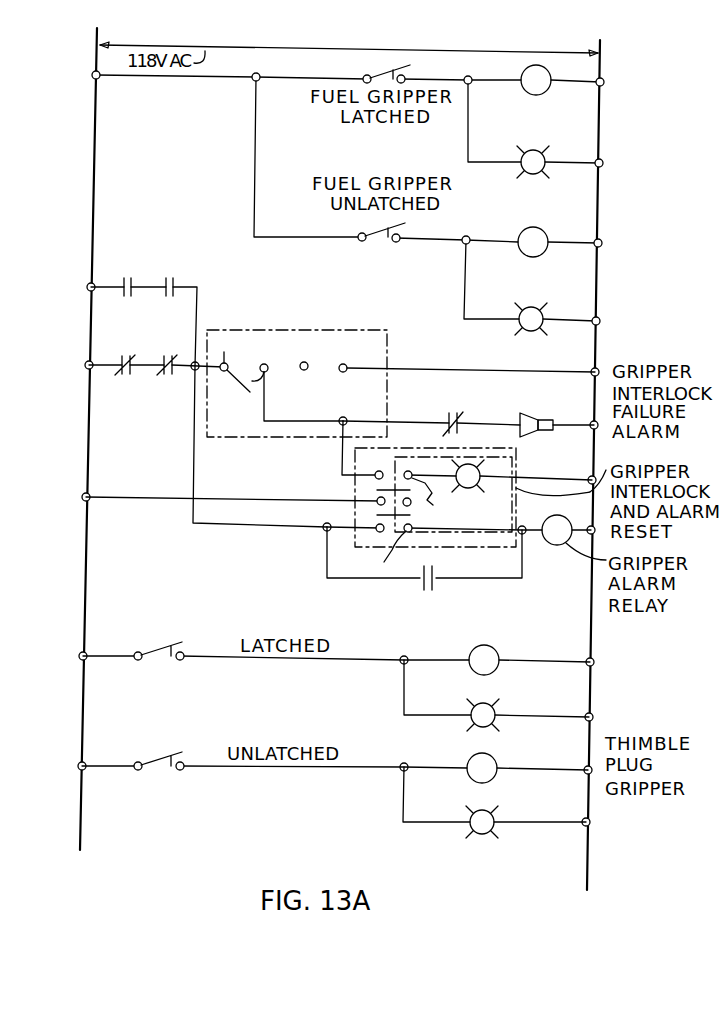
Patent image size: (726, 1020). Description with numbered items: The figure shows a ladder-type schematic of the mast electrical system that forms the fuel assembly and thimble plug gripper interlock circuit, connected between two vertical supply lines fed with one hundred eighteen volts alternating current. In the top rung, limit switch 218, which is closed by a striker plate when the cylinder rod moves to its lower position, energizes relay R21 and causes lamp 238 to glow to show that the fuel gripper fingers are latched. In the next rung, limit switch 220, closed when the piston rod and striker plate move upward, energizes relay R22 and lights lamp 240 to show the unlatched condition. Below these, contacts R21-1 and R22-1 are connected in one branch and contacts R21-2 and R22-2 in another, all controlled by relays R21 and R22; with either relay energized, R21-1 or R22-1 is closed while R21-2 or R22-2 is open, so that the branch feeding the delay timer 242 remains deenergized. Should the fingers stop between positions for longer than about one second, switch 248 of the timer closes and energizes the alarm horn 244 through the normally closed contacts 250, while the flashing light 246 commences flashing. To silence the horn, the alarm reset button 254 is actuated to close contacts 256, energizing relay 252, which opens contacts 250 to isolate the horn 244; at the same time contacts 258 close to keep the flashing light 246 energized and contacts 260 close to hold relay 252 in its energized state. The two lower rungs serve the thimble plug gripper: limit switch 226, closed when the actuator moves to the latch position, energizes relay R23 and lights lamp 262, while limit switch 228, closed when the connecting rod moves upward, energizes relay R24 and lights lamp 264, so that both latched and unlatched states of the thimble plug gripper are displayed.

The limit switch 218 is at (386, 72).
The limit switch 220 is at (360, 228).
The relay R21 is at (541, 77).
The relay R22 is at (539, 235).
The relay R23 is at (490, 648).
The relay R24 is at (490, 756).
The contacts R21-1 is at (118, 274).
The contacts R22-1 is at (182, 274).
The contacts R21-2 is at (119, 357).
The contacts R22-2 is at (166, 358).
The lamp 238 is at (535, 147).
The lamp 240 is at (531, 304).
The delay timer 242 is at (370, 306).
The alarm horn 244 is at (538, 418).
The flashing light 246 is at (481, 471).
The switch 248 is at (243, 389).
The contacts 250 is at (452, 419).
The relay 252 is at (559, 546).
The alarm reset button 254 is at (439, 496).
The contacts 256 is at (373, 550).
The contacts 258 is at (409, 504).
The contacts 260 is at (425, 591).
The limit switch 226 is at (160, 642).
The limit switch 228 is at (158, 752).
The lamp 262 is at (500, 703).
The lamp 264 is at (500, 810).